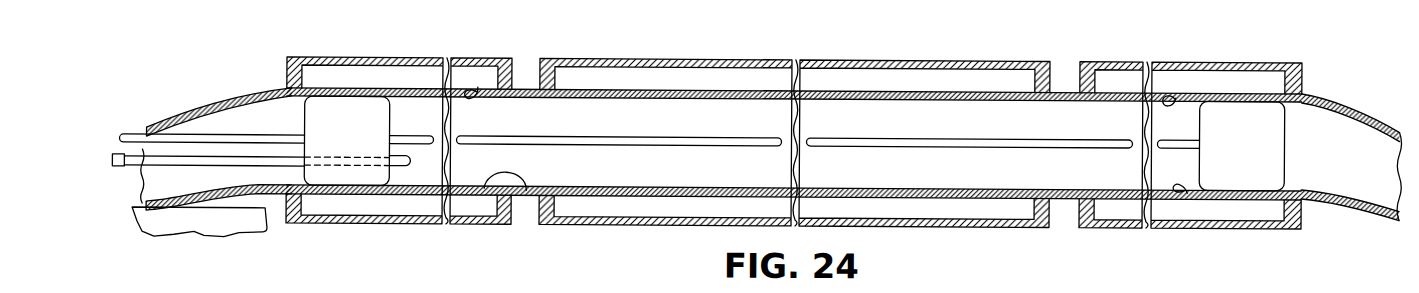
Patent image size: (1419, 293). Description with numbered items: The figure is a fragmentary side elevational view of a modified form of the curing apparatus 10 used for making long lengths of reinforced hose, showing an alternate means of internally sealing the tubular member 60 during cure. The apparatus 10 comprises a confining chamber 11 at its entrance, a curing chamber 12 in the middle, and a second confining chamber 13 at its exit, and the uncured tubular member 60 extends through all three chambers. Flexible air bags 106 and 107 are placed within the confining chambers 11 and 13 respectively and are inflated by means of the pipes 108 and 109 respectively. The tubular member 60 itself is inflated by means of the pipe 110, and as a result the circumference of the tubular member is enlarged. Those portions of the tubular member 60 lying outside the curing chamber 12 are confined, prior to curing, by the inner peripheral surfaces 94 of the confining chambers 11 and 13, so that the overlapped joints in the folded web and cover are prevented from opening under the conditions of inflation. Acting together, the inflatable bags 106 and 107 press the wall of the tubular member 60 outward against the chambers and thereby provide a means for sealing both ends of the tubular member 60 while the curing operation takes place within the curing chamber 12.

The curing apparatus 10 is at (757, 155).
The confining chamber 11 is at (341, 57).
The curing chamber 12 is at (911, 56).
The confining chamber 13 is at (1088, 57).
The tubular member 60 is at (239, 95).
The inner peripheral surface 94 is at (478, 86).
The flexible air bag 106 is at (318, 118).
The flexible air bag 107 is at (1275, 142).
The pipe 108 is at (128, 136).
The pipe 109 is at (628, 136).
The pipe 110 is at (209, 160).